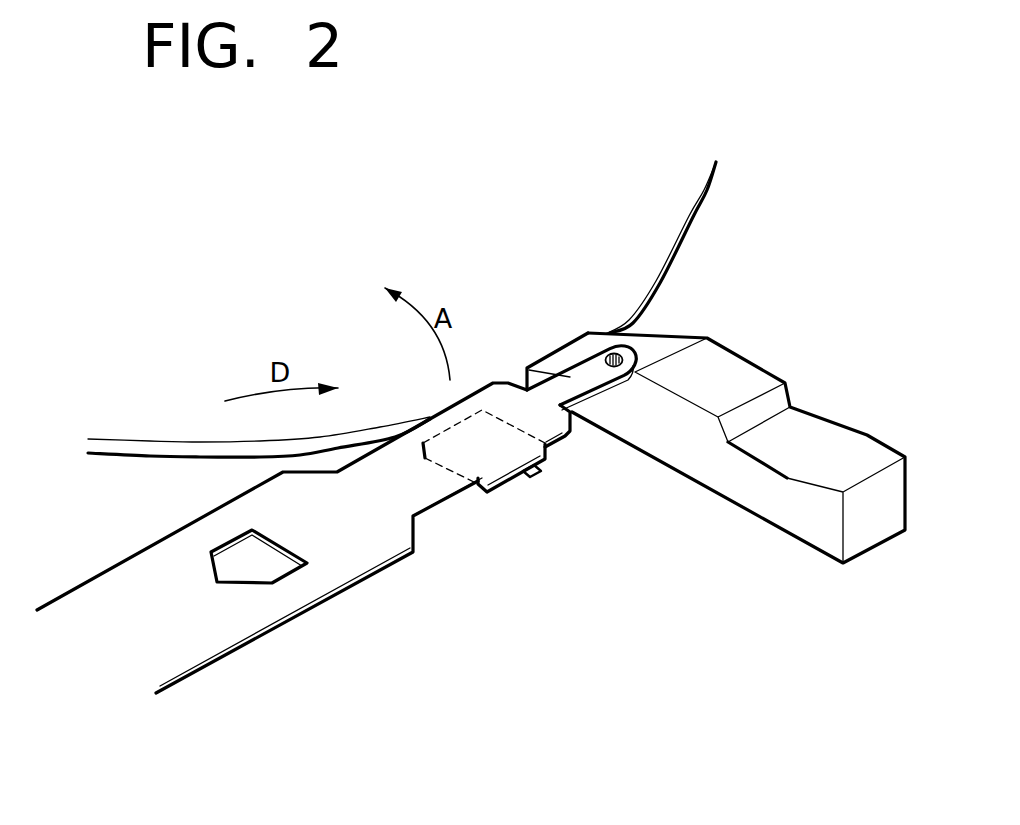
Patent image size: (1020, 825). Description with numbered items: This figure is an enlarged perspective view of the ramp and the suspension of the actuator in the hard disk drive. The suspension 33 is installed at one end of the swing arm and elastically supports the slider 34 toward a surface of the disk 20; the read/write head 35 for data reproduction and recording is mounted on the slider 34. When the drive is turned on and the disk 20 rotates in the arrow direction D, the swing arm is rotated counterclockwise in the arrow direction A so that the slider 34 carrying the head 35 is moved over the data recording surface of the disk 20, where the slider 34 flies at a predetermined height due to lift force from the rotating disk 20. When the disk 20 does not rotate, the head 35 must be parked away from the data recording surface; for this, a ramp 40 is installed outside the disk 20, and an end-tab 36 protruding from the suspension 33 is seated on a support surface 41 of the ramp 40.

The disk 20 is at (159, 432).
The suspension 33 is at (368, 552).
The slider 34 is at (505, 478).
The read/write head 35 is at (535, 475).
The end-tab 36 is at (615, 352).
The ramp 40 is at (720, 472).
The support surface 41 is at (723, 360).